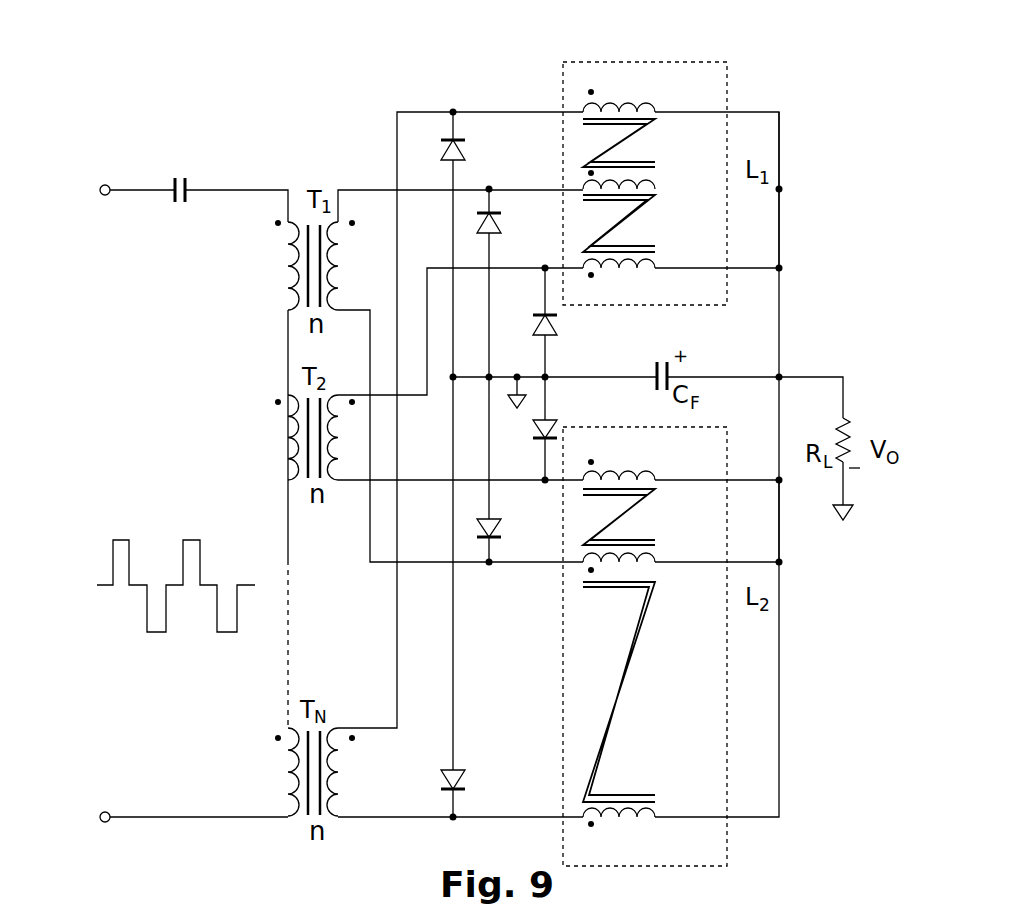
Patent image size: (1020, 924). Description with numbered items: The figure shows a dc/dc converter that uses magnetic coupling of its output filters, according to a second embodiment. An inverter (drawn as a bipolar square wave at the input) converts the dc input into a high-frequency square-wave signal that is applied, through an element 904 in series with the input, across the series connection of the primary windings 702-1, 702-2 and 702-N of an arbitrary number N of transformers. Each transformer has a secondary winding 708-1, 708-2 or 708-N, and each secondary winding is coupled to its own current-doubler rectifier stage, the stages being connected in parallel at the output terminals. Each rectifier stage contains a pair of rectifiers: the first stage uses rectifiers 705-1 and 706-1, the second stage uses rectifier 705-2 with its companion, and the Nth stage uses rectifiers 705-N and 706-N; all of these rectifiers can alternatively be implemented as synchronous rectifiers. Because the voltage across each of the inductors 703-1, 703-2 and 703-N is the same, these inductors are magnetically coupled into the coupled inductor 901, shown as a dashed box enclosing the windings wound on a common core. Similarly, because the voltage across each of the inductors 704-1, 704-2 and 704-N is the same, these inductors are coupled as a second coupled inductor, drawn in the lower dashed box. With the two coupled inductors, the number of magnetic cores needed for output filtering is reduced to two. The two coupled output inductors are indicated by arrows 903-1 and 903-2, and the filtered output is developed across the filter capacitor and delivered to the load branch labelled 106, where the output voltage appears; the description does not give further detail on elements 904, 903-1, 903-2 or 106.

The blocking capacitor CB 904 is at (188, 178).
The primary winding 702-1 is at (288, 270).
The primary winding 702-2 is at (288, 428).
The primary winding 702-N is at (288, 748).
The secondary winding 708-1 is at (340, 240).
The secondary winding 708-2 is at (340, 462).
The secondary winding 708-N is at (338, 765).
The rectifier 705-N is at (447, 140).
The rectifier 705-2 is at (552, 335).
The rectifier 705-1 is at (552, 420).
The rectifier 706-1 is at (492, 213).
The rectifier 706-N is at (460, 789).
The coupled inductor 901 is at (665, 62).
The inductor 703-N is at (597, 103).
The inductor 703-1 is at (655, 180).
The inductor 703-2 is at (620, 268).
The inductor 704-2 is at (608, 472).
The inductor 704-1 is at (650, 562).
The inductor 704-N is at (637, 817).
The first output inductor L1 903-1 is at (808, 165).
The second output inductor L2 903-2 is at (803, 576).
The load resistor RL / output voltage VO 106 is at (850, 440).